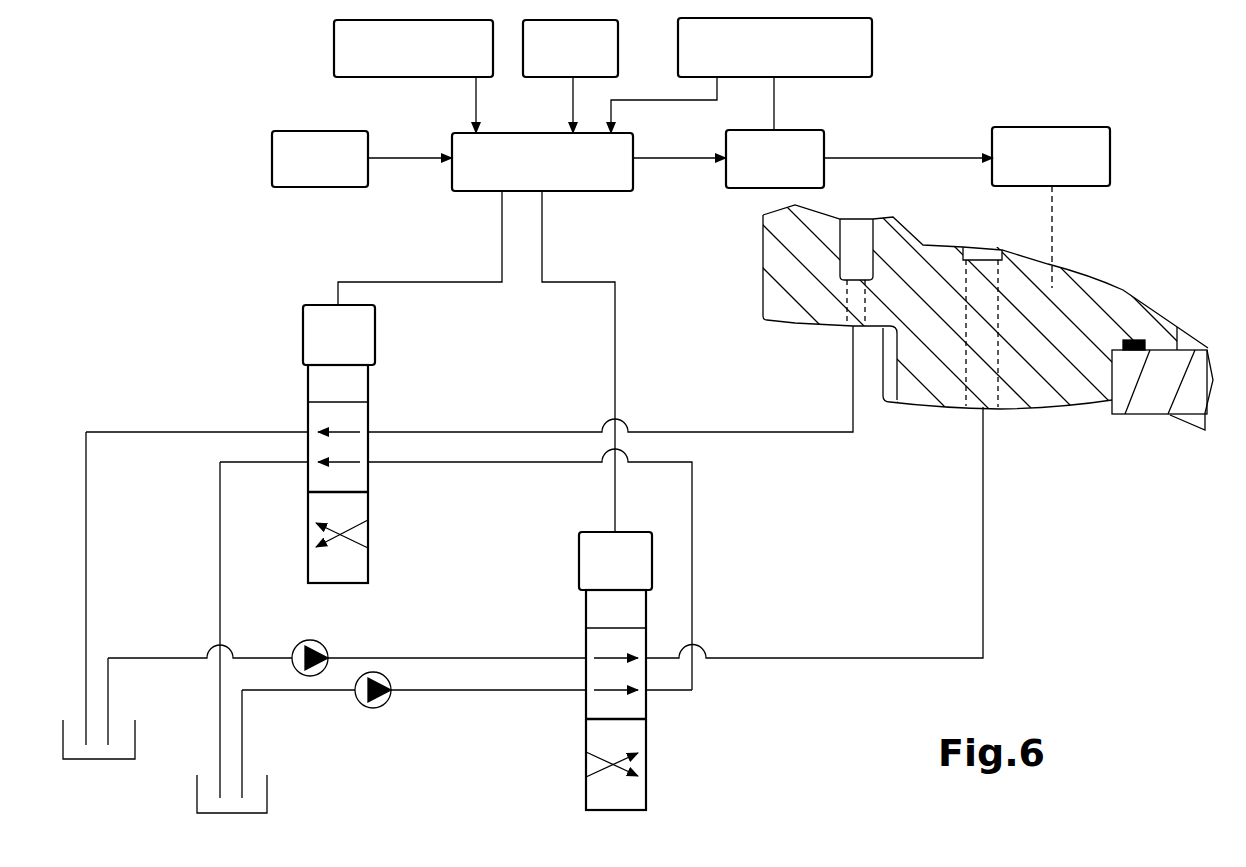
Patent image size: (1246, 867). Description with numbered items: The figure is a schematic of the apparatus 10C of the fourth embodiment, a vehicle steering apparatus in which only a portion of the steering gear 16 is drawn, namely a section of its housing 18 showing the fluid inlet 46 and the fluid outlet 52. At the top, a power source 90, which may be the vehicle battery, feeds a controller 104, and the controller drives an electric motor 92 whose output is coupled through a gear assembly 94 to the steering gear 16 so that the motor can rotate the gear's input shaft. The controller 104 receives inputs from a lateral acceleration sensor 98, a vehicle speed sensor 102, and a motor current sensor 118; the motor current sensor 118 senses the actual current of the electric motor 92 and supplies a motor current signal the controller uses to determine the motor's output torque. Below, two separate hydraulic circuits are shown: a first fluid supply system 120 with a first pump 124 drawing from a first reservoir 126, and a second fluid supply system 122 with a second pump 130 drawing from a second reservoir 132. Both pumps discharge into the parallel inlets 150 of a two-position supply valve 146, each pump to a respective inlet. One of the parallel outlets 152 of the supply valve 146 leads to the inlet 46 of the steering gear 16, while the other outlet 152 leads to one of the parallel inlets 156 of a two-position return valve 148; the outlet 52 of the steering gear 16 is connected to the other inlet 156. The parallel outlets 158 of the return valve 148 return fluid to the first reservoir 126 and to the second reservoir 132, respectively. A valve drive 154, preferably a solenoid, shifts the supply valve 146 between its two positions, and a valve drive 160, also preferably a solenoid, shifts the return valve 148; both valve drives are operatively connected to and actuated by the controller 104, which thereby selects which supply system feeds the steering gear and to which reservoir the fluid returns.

The apparatus 10C is at (921, 128).
The steering gear 16 is at (960, 372).
The housing 18 is at (960, 372).
The inlet 46 is at (985, 372).
The outlet 52 is at (850, 298).
The power source 90 is at (340, 187).
The electric motor 92 is at (800, 130).
The gear assembly 94 is at (1103, 143).
The lateral acceleration sensor 98 is at (432, 80).
The vehicle speed sensor 102 is at (533, 70).
The controller 104 is at (462, 186).
The motor current sensor 118 is at (858, 53).
The first fluid supply system 120 is at (176, 640).
The second fluid supply system 122 is at (329, 723).
The first pump 124 is at (326, 643).
The first reservoir 126 is at (93, 760).
The second pump 130 is at (385, 707).
The second reservoir 132 is at (197, 800).
The supply valve 146 is at (654, 731).
The return valve 148 is at (374, 480).
The inlets 150 is at (586, 690).
The outlets 152 is at (646, 690).
The valve drive 154 is at (583, 532).
The inlets 156 is at (368, 462).
The outlets 158 is at (308, 462).
The valve drive 160 is at (303, 330).